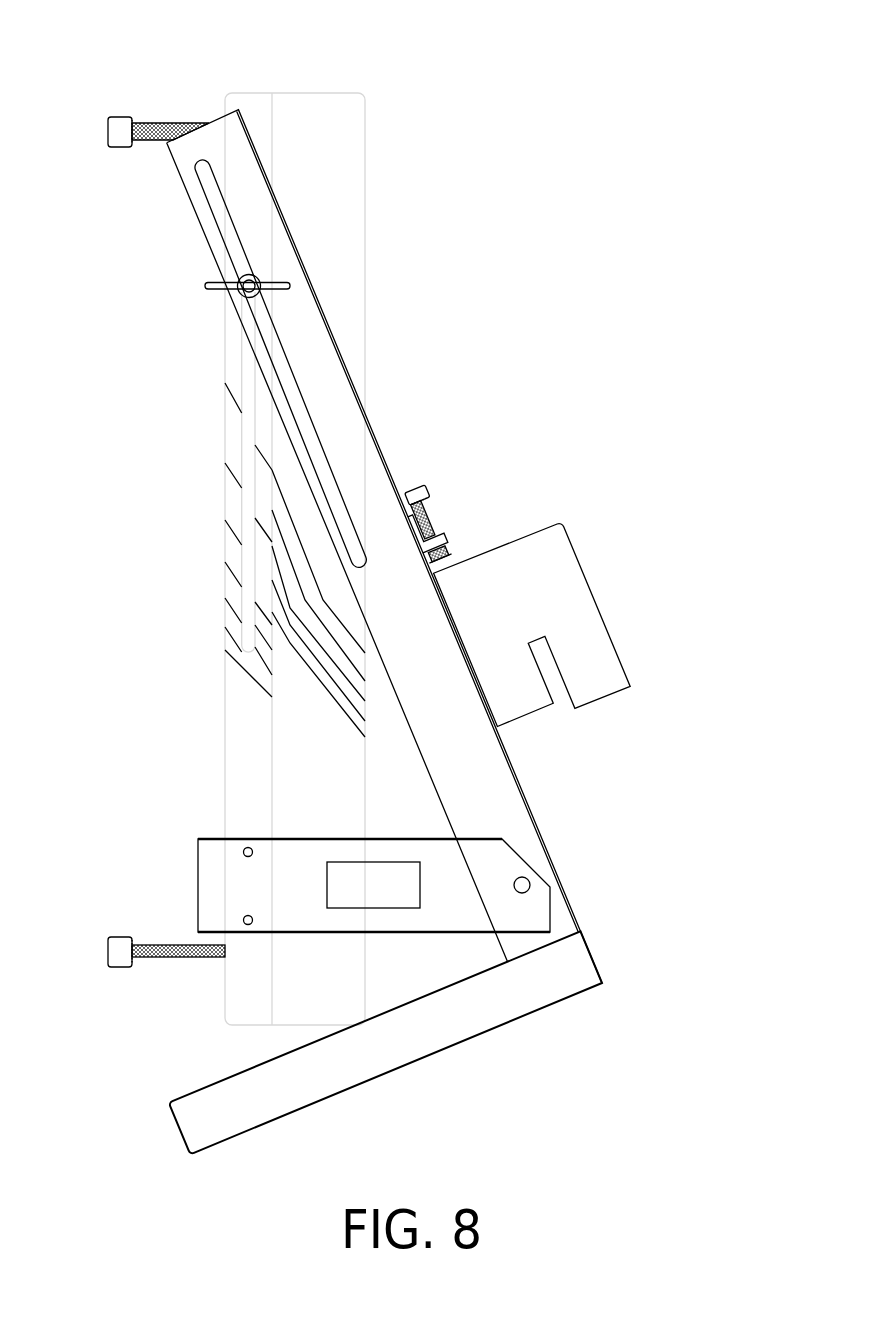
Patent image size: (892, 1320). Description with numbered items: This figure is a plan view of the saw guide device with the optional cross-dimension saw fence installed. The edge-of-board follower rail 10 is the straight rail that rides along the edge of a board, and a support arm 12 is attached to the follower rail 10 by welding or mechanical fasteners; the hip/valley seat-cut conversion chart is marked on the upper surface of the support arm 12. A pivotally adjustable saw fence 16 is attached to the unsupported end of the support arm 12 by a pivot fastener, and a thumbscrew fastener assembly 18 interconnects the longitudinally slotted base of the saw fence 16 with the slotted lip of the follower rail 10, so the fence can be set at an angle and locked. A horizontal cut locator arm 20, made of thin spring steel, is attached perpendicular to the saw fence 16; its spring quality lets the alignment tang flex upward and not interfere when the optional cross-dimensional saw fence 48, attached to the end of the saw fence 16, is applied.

The edge-of-board follower rail 10 is at (342, 122).
The support arm 12 is at (212, 858).
The pivotally adjustable saw fence 16 is at (563, 931).
The thumbscrew fastener assembly 18 is at (241, 278).
The horizontal cut locator arm 20 is at (548, 547).
The cross-dimensional saw fence 48 is at (404, 1038).